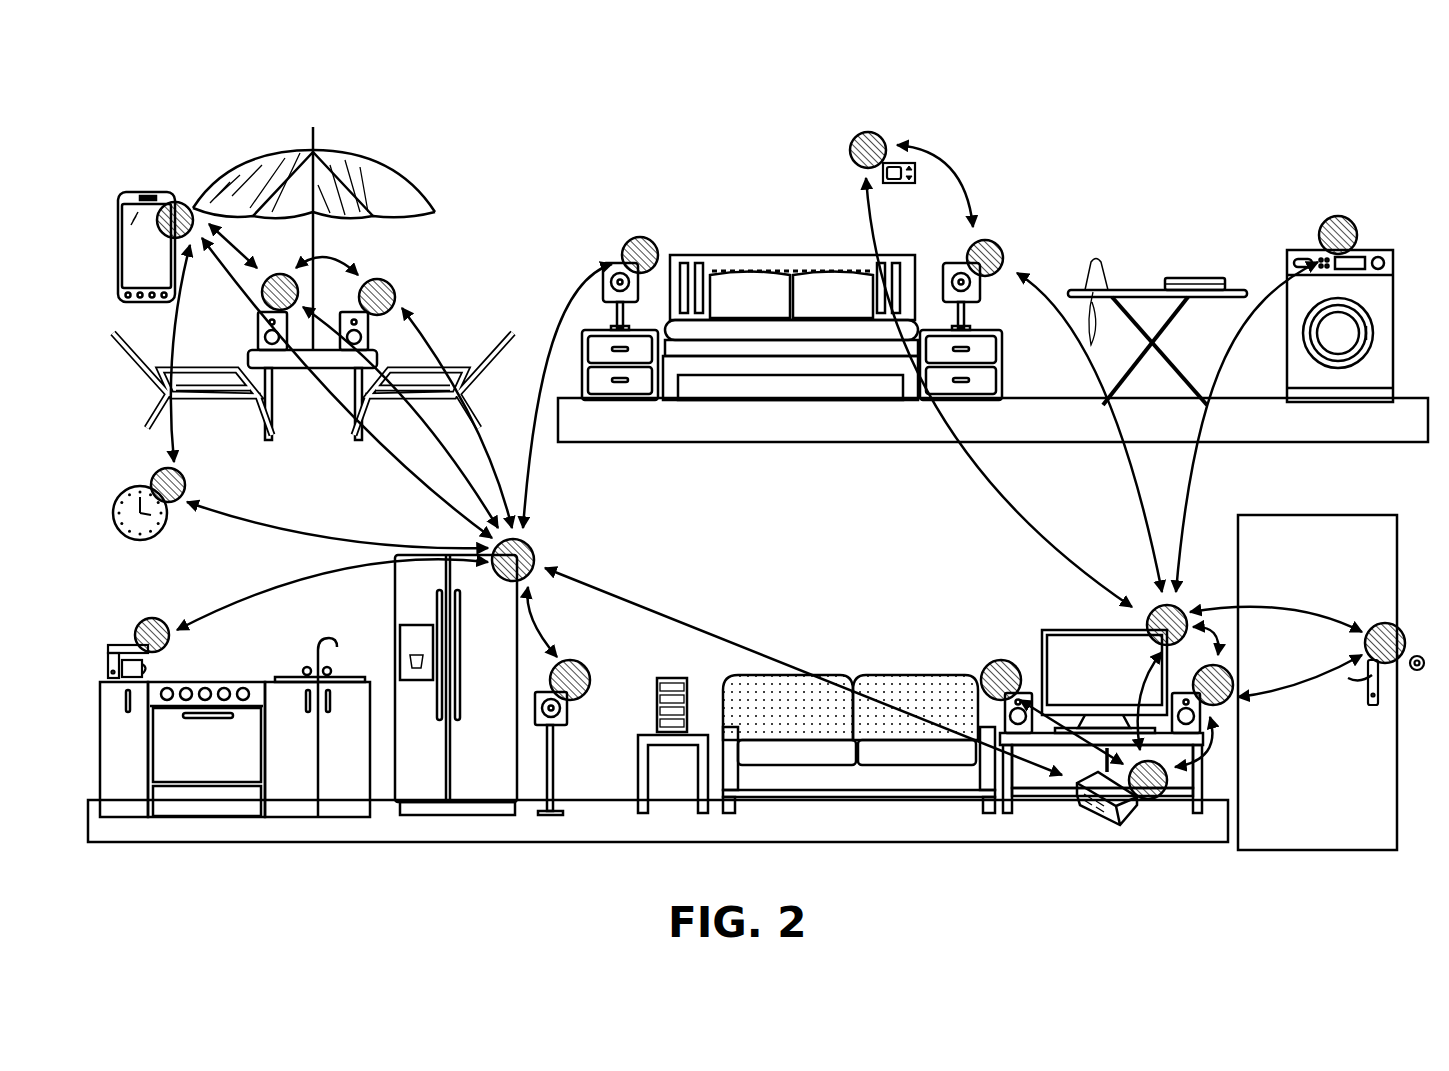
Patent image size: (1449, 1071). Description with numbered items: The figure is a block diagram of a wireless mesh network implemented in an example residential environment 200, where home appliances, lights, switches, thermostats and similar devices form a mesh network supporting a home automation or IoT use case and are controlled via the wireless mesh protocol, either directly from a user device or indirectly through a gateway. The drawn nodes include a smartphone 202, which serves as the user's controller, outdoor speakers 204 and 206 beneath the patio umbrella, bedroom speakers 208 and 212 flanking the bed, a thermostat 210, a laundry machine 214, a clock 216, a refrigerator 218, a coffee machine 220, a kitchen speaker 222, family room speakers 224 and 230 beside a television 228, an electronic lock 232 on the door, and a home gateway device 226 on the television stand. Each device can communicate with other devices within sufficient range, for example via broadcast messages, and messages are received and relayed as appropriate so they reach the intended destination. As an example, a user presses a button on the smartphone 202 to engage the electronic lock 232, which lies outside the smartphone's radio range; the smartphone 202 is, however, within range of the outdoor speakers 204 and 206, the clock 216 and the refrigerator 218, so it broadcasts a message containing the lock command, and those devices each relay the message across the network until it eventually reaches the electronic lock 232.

The residential environment 200 is at (1366, 125).
The smartphone 202 is at (178, 202).
The outdoor speaker 204 is at (272, 275).
The outdoor speaker 206 is at (392, 283).
The bedroom speaker 208 is at (645, 238).
The thermostat 210 is at (872, 132).
The bedroom speaker 212 is at (992, 242).
The laundry machine 214 is at (1340, 218).
The clock 216 is at (186, 476).
The refrigerator 218 is at (535, 542).
The coffee machine 220 is at (160, 618).
The kitchen speaker 222 is at (582, 662).
The family room speaker 224 is at (999, 660).
The home gateway device 226 is at (1157, 800).
The television 228 is at (1152, 605).
The family room speaker 230 is at (1234, 672).
The electronic lock 232 is at (1385, 622).